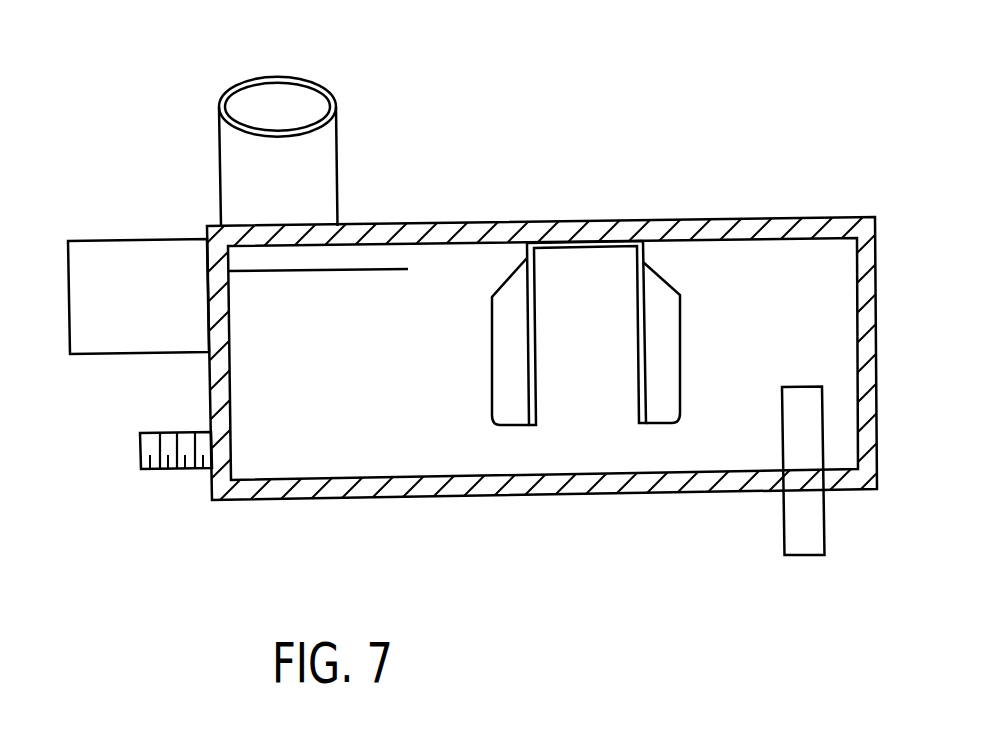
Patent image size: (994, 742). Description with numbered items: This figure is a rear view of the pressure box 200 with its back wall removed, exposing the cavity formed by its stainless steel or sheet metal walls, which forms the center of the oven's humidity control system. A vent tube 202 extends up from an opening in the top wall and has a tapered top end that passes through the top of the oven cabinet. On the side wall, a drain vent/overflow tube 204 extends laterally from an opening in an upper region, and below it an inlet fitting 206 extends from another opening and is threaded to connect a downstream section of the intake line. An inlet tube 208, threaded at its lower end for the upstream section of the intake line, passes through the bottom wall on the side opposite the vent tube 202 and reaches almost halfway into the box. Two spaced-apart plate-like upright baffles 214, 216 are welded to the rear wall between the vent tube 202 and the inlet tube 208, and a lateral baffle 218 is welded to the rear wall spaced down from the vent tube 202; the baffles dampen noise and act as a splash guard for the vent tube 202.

The pressure box 200 is at (488, 185).
The vent tube 202 is at (318, 83).
The drain vent/overflow tube 204 is at (122, 353).
The inlet fitting 206 is at (160, 468).
The inlet tube 208 is at (823, 531).
The upright baffle 214 is at (527, 252).
The upright baffle 216 is at (643, 248).
The lateral baffle 218 is at (292, 273).